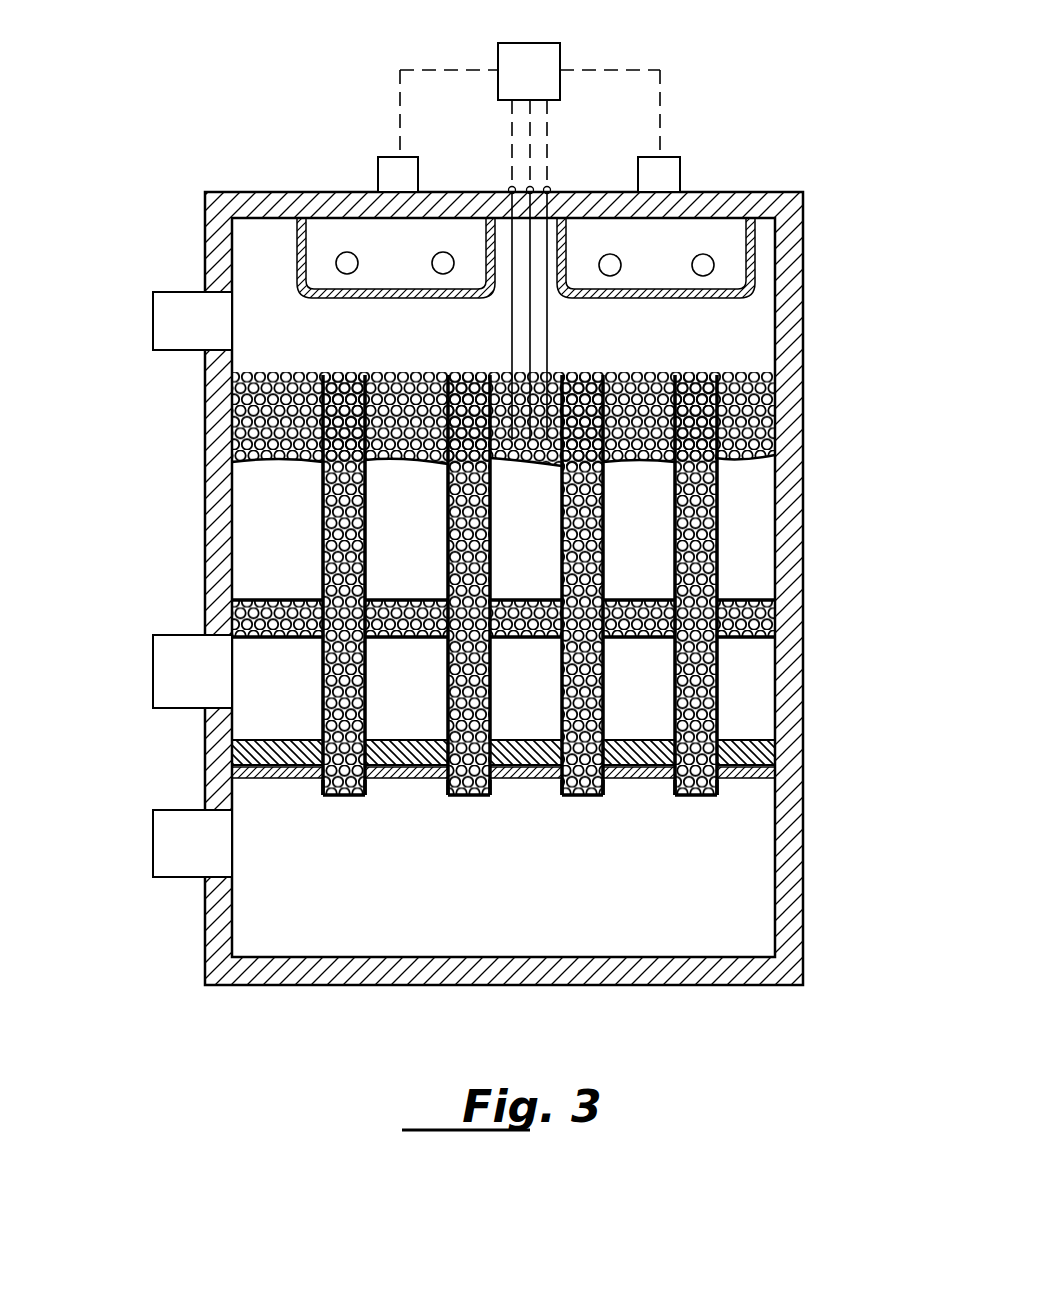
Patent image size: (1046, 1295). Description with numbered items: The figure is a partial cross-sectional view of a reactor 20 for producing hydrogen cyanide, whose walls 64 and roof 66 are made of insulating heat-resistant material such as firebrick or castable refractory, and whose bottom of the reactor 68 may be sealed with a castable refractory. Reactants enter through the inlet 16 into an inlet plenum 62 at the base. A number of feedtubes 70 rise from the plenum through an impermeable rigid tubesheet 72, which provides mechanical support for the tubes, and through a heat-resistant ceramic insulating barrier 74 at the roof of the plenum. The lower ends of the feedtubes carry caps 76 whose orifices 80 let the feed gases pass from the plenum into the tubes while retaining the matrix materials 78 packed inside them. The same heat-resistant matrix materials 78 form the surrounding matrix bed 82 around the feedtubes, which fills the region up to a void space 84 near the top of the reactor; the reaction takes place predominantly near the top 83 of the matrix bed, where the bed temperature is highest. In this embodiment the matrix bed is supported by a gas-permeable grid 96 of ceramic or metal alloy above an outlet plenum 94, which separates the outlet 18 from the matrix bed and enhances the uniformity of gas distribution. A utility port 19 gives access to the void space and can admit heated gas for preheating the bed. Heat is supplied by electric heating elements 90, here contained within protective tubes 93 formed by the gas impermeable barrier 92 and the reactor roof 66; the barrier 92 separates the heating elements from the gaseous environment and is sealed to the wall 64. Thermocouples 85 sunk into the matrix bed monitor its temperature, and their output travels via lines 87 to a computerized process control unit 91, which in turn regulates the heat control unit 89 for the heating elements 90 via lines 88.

The inlet 16 is at (175, 840).
The outlet 18 is at (165, 672).
The utility port 19 is at (165, 322).
The reactor 20 is at (712, 170).
The inlet plenum 62 is at (400, 915).
The walls 64 is at (790, 515).
The roof 66 is at (370, 192).
The bottom of the reactor 68 is at (645, 968).
The feedtubes 70 is at (370, 578).
The tubesheet 72 is at (752, 778).
The ceramic insulating barrier 74 is at (755, 752).
The caps 76 is at (355, 797).
The matrix materials 78 is at (370, 518).
The orifices 80 is at (342, 797).
The matrix bed 82 is at (283, 600).
The top of the matrix bed 83 is at (357, 372).
The void space 84 is at (653, 346).
The thermocouples 85 is at (547, 334).
The lines 87 is at (547, 150).
The lines 88 is at (458, 68).
The heat control unit 89 is at (408, 163).
The electric heating elements 90 is at (432, 265).
The computerized process control unit 91 is at (515, 88).
The gas impermeable barrier 92 is at (300, 285).
The protective tubes 93 is at (385, 252).
The outlet plenum 94 is at (270, 660).
The grid 96 is at (740, 640).